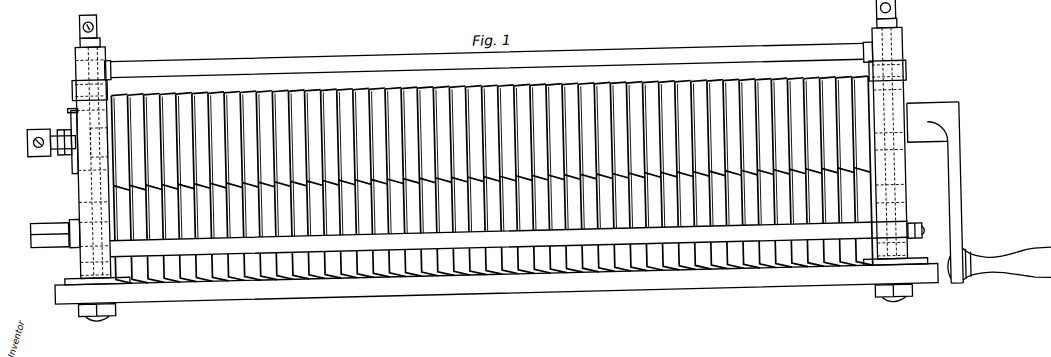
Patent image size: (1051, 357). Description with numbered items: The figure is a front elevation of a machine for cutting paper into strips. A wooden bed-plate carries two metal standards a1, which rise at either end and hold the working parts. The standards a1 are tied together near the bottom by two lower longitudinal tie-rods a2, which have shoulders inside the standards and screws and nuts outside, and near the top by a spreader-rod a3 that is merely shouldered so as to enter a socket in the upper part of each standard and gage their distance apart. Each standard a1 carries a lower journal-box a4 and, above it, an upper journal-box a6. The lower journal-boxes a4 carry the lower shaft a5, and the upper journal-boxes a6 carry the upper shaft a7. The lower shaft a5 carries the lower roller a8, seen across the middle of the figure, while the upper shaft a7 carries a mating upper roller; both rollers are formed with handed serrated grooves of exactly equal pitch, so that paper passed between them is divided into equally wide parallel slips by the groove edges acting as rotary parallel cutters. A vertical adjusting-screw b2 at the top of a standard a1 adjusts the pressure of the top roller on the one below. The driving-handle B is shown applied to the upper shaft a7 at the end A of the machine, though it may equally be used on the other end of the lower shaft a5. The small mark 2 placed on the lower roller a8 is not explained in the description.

The metal standards a1 is at (497, 290).
The lower longitudinal tie-rods a2 is at (487, 148).
The spreader-rod a3 is at (887, 232).
The lower journal-boxes a4 is at (920, 223).
The lower shaft a5 is at (509, 238).
The upper journal-boxes a6 is at (908, 168).
The upper shaft a7 is at (874, 134).
The lower roller a8 is at (507, 213).
The vertical adjusting-screw b2 is at (897, 27).
The end of the machine A is at (948, 193).
The driving-handle B is at (1003, 233).
The slats 2 is at (491, 179).